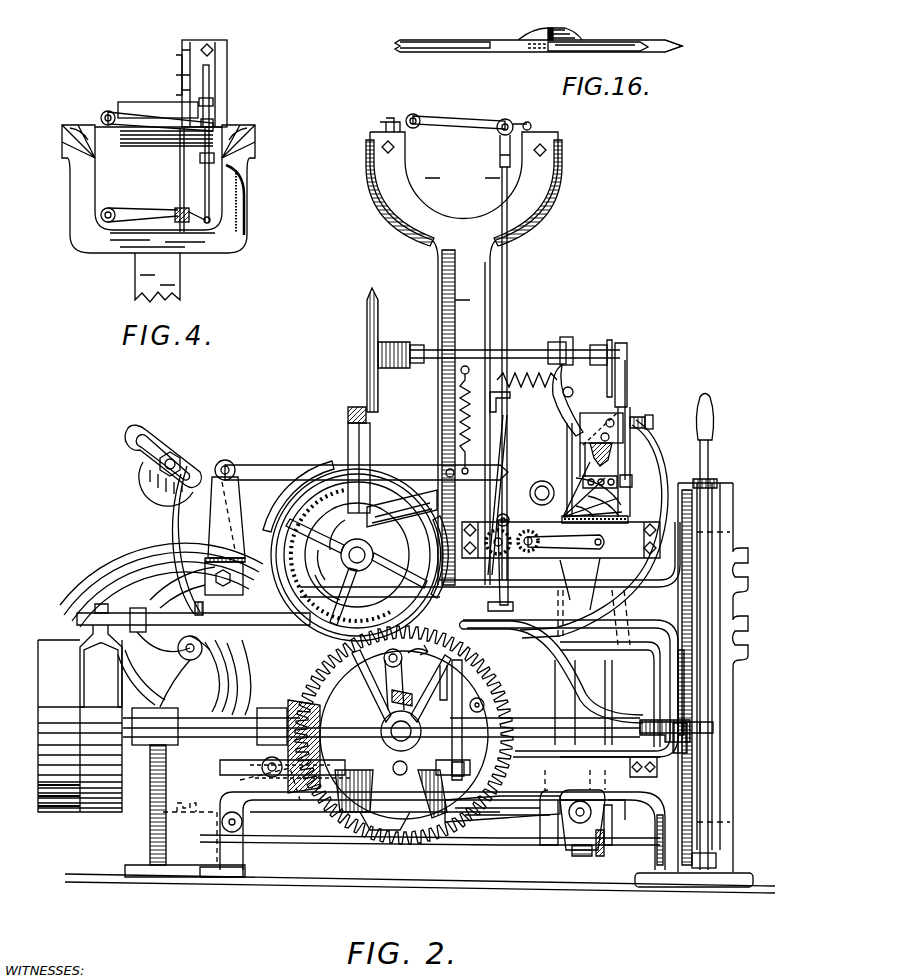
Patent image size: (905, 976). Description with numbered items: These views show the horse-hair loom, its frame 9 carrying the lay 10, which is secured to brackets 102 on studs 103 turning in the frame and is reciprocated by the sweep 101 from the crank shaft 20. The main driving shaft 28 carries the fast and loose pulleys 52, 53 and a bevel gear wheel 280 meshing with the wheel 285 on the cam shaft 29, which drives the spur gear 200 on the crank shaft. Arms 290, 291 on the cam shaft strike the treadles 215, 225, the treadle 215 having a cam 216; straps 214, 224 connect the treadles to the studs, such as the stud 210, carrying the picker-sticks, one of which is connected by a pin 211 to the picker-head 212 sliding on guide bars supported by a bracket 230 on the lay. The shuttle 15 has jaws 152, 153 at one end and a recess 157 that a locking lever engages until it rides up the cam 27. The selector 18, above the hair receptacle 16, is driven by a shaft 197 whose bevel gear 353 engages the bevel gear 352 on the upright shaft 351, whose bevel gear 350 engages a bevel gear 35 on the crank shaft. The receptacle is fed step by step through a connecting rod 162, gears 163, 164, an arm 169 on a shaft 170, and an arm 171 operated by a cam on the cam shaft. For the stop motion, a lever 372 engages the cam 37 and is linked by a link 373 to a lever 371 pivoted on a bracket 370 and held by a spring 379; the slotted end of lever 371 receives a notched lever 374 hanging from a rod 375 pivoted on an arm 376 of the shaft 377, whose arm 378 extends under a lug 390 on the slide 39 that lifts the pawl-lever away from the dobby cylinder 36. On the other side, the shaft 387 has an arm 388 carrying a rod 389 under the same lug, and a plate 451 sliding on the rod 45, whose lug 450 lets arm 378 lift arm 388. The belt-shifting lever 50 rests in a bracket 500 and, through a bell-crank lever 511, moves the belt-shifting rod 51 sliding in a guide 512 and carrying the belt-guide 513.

In FIG. 4, the frame 9 is at (232, 254).
In FIG. 2, the frame 9 is at (437, 258).
In FIG. 4, the slide 39 is at (212, 101).
In FIG. 4, the lug 390 is at (213, 123).
In FIG. 4, the arm 378 is at (145, 118).
In FIG. 4, the shaft 377 is at (108, 111).
In FIG. 2, the shaft 377 is at (413, 114).
In FIG. 4, the dobby-cylinder 36 is at (128, 147).
In FIG. 4, the rod 45 is at (186, 181).
In FIG. 4, the rod 389 is at (211, 200).
In FIG. 4, the plate 451 is at (190, 214).
In FIG. 4, the lug 450 is at (215, 233).
In FIG. 4, the shaft 387 is at (104, 219).
In FIG. 4, the arm 388 is at (135, 218).
In FIG. 16, the shuttle 15 is at (398, 43).
In FIG. 16, the recess 157 is at (528, 38).
In FIG. 16, the movable jaw 153 is at (625, 44).
In FIG. 16, the jaw 152 is at (682, 46).
In FIG. 2, the arm 376 is at (470, 120).
In FIG. 2, the rod 375 is at (509, 272).
In FIG. 2, the bevel gear 353 is at (367, 318).
In FIG. 2, the bevel gear 352 is at (352, 405).
In FIG. 2, the upright shaft 351 is at (352, 424).
In FIG. 2, the lever 371 is at (303, 464).
In FIG. 2, the spring 379 is at (460, 408).
In FIG. 2, the sweep 101 is at (400, 508).
In FIG. 2, the driving shaft 197 is at (583, 350).
In FIG. 2, the bracket 230 is at (595, 417).
In FIG. 2, the pin 211 is at (650, 419).
In FIG. 2, the picker-head 212 is at (612, 455).
In FIG. 2, the lay 10 is at (633, 479).
In FIG. 2, the selector 18 is at (612, 490).
In FIG. 2, the receptacle 16 is at (620, 521).
In FIG. 2, the belt-shifting lever 50 is at (710, 452).
In FIG. 2, the bracket 500 is at (718, 478).
In FIG. 2, the notched lever 374 is at (506, 428).
In FIG. 2, the gear 164 is at (513, 518).
In FIG. 2, the gear 163 is at (520, 530).
In FIG. 2, the connecting rod 162 is at (550, 536).
In FIG. 2, the bevel gear 350 is at (300, 509).
In FIG. 2, the bevel gear 35 is at (300, 533).
In FIG. 2, the crank shaft 20 is at (340, 554).
In FIG. 2, the spur gear 200 is at (305, 498).
In FIG. 2, the bracket 370 is at (215, 515).
In FIG. 2, the belt-shifting rod 51 is at (80, 611).
In FIG. 2, the guide 512 is at (137, 607).
In FIG. 2, the belt-guide 513 is at (80, 695).
In FIG. 2, the fast pulley 52 is at (104, 812).
In FIG. 2, the loose pulley 53 is at (62, 812).
In FIG. 2, the main driving shaft 28 is at (225, 740).
In FIG. 2, the cam 37 is at (302, 746).
In FIG. 2, the cam 216 is at (396, 846).
In FIG. 2, the cam shaft 29 is at (392, 725).
In FIG. 2, the arm 290 is at (388, 680).
In FIG. 2, the arm 171 is at (392, 698).
In FIG. 2, the link 373 is at (460, 681).
In FIG. 2, the shaft 170 is at (484, 704).
In FIG. 2, the arm 169 is at (490, 645).
In FIG. 2, the cam 27 is at (613, 667).
In FIG. 2, the bell-crank lever 511 is at (705, 730).
In FIG. 2, the treadle 215 is at (522, 846).
In FIG. 2, the treadle 225 is at (498, 846).
In FIG. 2, the arm 291 is at (433, 818).
In FIG. 2, the wheel 285 is at (360, 815).
In FIG. 2, the lever 372 is at (330, 778).
In FIG. 2, the bevel gear wheel 280 is at (300, 768).
In FIG. 2, the bracket 102 is at (569, 850).
In FIG. 2, the strap 224 is at (582, 857).
In FIG. 2, the strap 214 is at (598, 855).
In FIG. 2, the stud 103 is at (604, 850).
In FIG. 2, the stud 210 is at (612, 808).